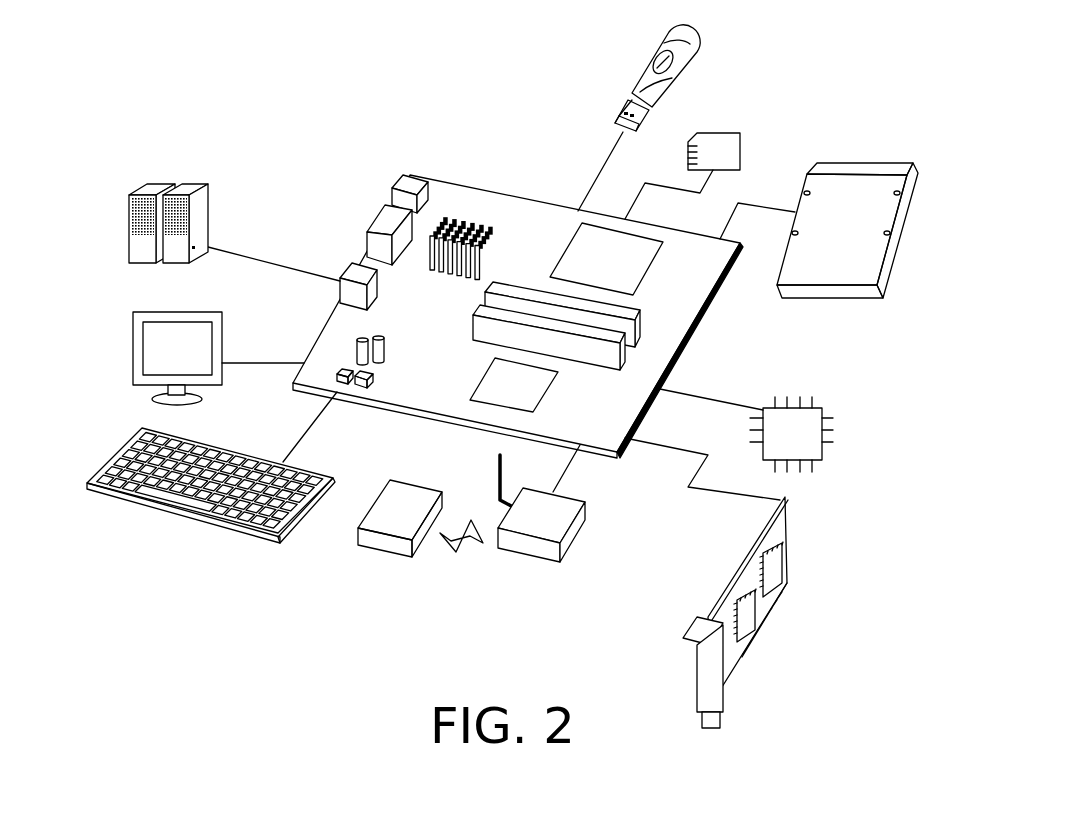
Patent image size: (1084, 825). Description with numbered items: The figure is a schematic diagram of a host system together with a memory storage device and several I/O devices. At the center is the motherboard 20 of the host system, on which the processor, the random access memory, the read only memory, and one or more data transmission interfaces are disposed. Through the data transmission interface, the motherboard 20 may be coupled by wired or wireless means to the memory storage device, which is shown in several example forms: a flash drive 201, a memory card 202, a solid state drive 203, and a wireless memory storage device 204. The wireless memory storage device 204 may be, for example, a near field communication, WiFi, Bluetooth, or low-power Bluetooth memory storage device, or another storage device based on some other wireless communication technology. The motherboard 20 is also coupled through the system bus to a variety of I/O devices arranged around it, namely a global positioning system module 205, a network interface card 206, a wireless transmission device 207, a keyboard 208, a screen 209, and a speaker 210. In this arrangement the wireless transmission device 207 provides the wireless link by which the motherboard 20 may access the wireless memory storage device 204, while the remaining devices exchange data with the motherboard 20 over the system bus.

The motherboard 20 is at (518, 218).
The flash drive 201 is at (645, 72).
The memory card 202 is at (742, 138).
The solid state drive 203 is at (866, 162).
The wireless memory storage device 204 is at (373, 490).
The global positioning system module 205 is at (833, 432).
The network interface card 206 is at (790, 555).
The wireless transmission device 207 is at (575, 540).
The keyboard 208 is at (213, 522).
The screen 209 is at (133, 367).
The speaker 210 is at (129, 248).